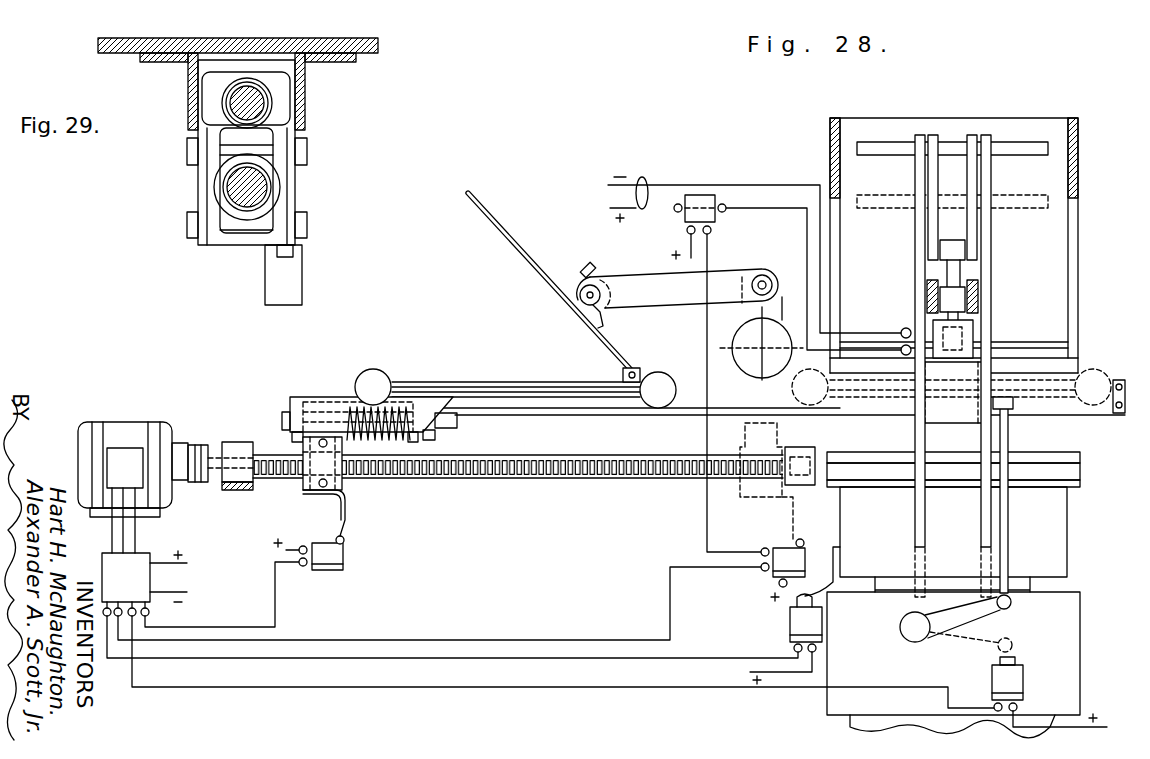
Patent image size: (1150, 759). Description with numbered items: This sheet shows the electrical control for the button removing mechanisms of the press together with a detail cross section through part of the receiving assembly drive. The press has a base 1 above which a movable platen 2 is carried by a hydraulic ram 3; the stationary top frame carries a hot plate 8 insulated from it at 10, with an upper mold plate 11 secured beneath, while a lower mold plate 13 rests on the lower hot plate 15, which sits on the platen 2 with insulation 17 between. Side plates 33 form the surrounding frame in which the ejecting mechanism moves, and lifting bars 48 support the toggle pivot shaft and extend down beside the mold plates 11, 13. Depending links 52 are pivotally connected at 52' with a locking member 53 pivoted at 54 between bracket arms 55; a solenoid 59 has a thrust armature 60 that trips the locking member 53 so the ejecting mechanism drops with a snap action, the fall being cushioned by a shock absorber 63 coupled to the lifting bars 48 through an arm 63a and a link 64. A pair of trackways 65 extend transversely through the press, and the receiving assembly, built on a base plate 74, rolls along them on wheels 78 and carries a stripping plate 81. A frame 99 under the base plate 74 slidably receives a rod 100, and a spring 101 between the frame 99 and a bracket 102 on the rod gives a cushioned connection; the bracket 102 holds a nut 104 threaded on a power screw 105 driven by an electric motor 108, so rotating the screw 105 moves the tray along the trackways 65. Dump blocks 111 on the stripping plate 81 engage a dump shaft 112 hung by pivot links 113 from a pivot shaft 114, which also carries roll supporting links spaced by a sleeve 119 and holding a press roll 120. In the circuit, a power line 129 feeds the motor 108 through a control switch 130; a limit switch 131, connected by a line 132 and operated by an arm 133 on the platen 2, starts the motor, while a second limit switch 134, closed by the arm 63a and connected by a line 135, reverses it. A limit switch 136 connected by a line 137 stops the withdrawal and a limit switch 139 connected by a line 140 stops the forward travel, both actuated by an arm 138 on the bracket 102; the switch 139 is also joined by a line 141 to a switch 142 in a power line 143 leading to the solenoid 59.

In FIG. 28, the base 1 is at (1079, 629).
In FIG. 28, the movable platen 2 is at (1062, 539).
In FIG. 28, the hydraulic ram 3 is at (1031, 587).
In FIG. 28, the hot plate 8 is at (1074, 358).
In FIG. 28, the insulation 10 is at (1068, 342).
In FIG. 28, the mold plate 11 is at (1074, 371).
In FIG. 28, the lower mold plate 13 is at (1074, 458).
In FIG. 28, the lower hot plate 15 is at (1074, 472).
In FIG. 28, the insulation 17 is at (1077, 487).
In FIG. 28, the side plates 33 is at (830, 152).
In FIG. 28, the lifting bars 48 is at (916, 272).
In FIG. 28, the depending links 52 is at (923, 197).
In FIG. 28, the pivot 52' is at (917, 253).
In FIG. 28, the locking member 53 is at (953, 274).
In FIG. 28, the pivot 54 is at (978, 298).
In FIG. 28, the bracket arms 55 is at (927, 298).
In FIG. 28, the solenoid 59 is at (963, 333).
In FIG. 28, the thrust armature 60 is at (933, 331).
In FIG. 28, the shock absorber 63 is at (915, 641).
In FIG. 28, the arm 63a is at (960, 620).
In FIG. 28, the link 64 is at (1008, 554).
In FIG. 28, the trackways 65 is at (598, 413).
In FIG. 29, the base plate 74 is at (125, 37).
In FIG. 28, the base plate 74 is at (503, 394).
In FIG. 28, the wheels 78 is at (385, 378).
In FIG. 28, the stripping plate 81 is at (513, 248).
In FIG. 29, the frame 99 is at (302, 90).
In FIG. 29, the rod 100 is at (248, 107).
In FIG. 28, the rod 100 is at (450, 427).
In FIG. 29, the spring 101 is at (263, 113).
In FIG. 29, the bracket 102 is at (207, 172).
In FIG. 29, the nut 104 is at (273, 187).
In FIG. 29, the power screw 105 is at (228, 193).
In FIG. 28, the power screw 105 is at (558, 479).
In FIG. 28, the electric motor 108 is at (140, 419).
In FIG. 28, the dump blocks 111 is at (588, 266).
In FIG. 28, the dump shaft 112 is at (577, 299).
In FIG. 28, the pivot links 113 is at (654, 296).
In FIG. 28, the pivot shaft 114 is at (781, 262).
In FIG. 28, the sleeve 119 is at (742, 303).
In FIG. 28, the press roll 120 is at (752, 380).
In FIG. 28, the power line 129 is at (178, 570).
In FIG. 28, the control switch 130 is at (150, 553).
In FIG. 28, the limit switch 131 is at (790, 624).
In FIG. 28, the line 132 is at (662, 659).
In FIG. 28, the arm 133 is at (846, 582).
In FIG. 28, the second limit switch 134 is at (1022, 665).
In FIG. 28, the line 135 is at (658, 690).
In FIG. 28, the limit switch 136 is at (344, 561).
In FIG. 28, the line 137 is at (275, 603).
In FIG. 29, the arm 138 is at (277, 276).
In FIG. 28, the arm 138 is at (349, 522).
In FIG. 28, the limit switch 139 is at (774, 578).
In FIG. 28, the line 140 is at (572, 636).
In FIG. 28, the line 141 is at (707, 508).
In FIG. 28, the switch 142 is at (708, 195).
In FIG. 28, the power line 143 is at (640, 214).